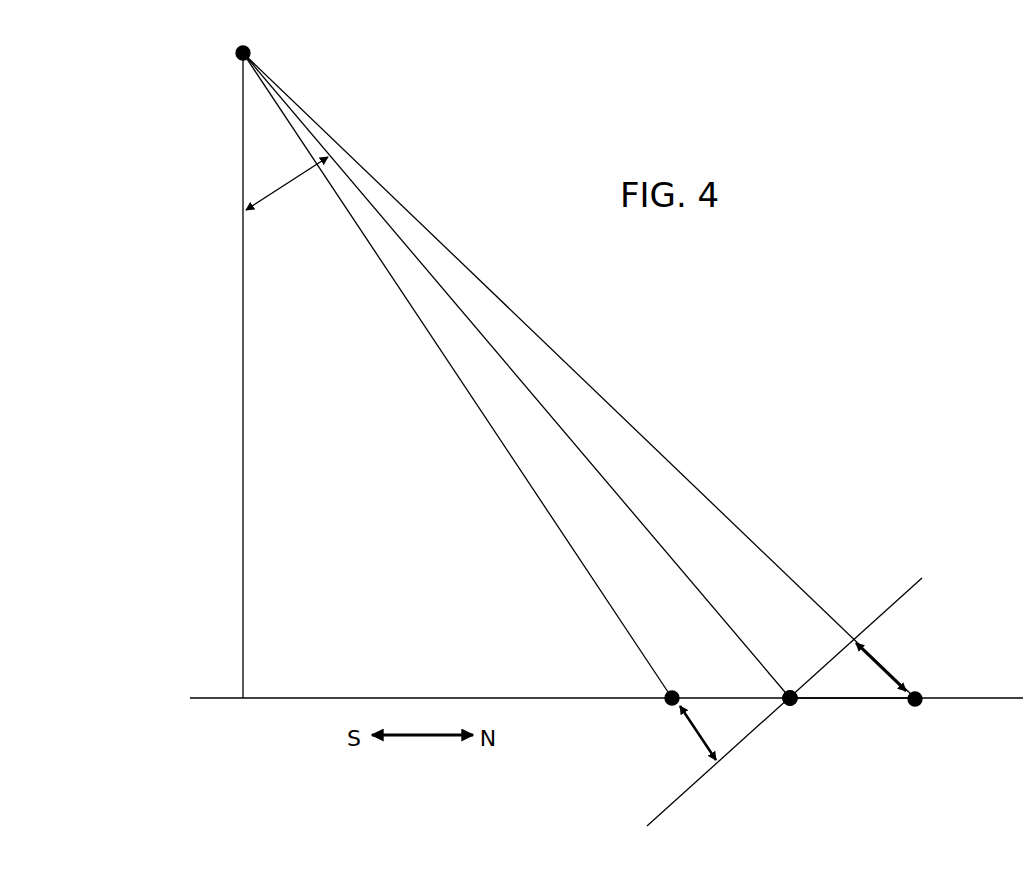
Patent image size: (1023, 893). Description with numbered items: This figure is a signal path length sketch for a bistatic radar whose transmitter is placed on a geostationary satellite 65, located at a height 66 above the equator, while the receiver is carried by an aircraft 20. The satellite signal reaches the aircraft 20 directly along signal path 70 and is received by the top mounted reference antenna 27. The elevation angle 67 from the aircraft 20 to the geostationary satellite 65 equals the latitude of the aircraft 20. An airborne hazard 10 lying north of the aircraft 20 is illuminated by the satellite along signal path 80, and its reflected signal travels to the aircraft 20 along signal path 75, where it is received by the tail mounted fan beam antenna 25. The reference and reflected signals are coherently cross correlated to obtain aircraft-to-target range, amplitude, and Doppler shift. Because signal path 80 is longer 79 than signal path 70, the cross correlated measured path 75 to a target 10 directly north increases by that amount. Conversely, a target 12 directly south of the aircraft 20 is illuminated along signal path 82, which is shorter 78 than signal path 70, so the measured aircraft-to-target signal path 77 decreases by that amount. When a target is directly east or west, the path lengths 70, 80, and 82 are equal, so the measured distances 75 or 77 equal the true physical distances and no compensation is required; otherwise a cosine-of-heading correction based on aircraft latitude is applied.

The airborne hazard 10 is at (925, 695).
The target 12 is at (665, 703).
The aircraft 20 is at (795, 705).
The tail mounted fan beam antenna 25 is at (806, 745).
The top mounted reference antenna 27 is at (806, 758).
The geostationary satellite 65 is at (238, 54).
The height 66 is at (243, 303).
The elevation angle 67 is at (290, 187).
The signal path 70 is at (738, 632).
The signal path 75 is at (858, 702).
The signal path 77 is at (713, 697).
The shorter 78 is at (695, 733).
The longer 79 is at (888, 668).
The signal path 80 is at (703, 490).
The signal path 82 is at (545, 502).